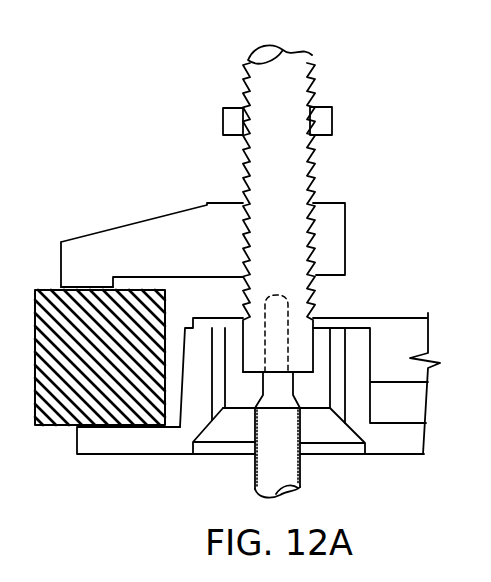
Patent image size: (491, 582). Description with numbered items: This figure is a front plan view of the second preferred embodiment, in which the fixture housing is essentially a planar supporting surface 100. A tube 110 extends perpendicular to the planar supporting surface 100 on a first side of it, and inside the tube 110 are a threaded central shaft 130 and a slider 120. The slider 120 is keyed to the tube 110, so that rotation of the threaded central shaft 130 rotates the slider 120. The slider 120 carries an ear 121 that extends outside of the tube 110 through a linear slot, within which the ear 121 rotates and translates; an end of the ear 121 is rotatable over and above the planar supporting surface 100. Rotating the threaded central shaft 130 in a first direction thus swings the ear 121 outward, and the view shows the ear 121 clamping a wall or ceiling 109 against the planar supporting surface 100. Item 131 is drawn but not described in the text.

The planar supporting surface 100 is at (100, 454).
The wall or ceiling 109 is at (100, 357).
The tube 110 is at (332, 122).
The slider 120 is at (183, 213).
The ear 121 is at (100, 290).
The threaded central shaft 130 is at (243, 177).
The bolt 131 is at (327, 455).